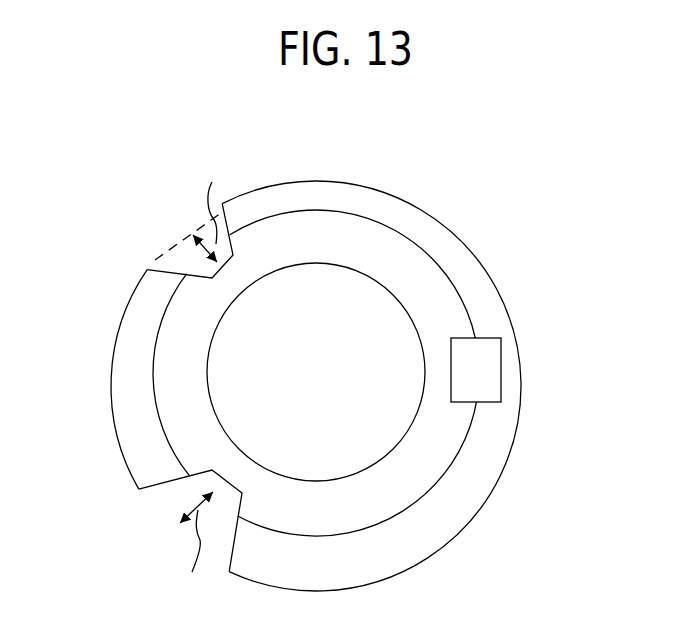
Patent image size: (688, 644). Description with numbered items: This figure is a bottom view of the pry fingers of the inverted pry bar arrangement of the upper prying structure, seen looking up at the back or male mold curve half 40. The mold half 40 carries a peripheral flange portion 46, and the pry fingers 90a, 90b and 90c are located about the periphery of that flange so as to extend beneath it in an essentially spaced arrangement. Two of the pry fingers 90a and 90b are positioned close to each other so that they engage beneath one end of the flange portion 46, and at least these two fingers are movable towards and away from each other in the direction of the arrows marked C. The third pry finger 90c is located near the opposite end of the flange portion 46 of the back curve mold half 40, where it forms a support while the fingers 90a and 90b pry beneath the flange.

The back or male mold curve half 40 is at (327, 362).
The flange portion 46 is at (425, 280).
The pry finger 90a is at (168, 261).
The pry finger 90b is at (150, 501).
The pry finger 90c is at (493, 373).